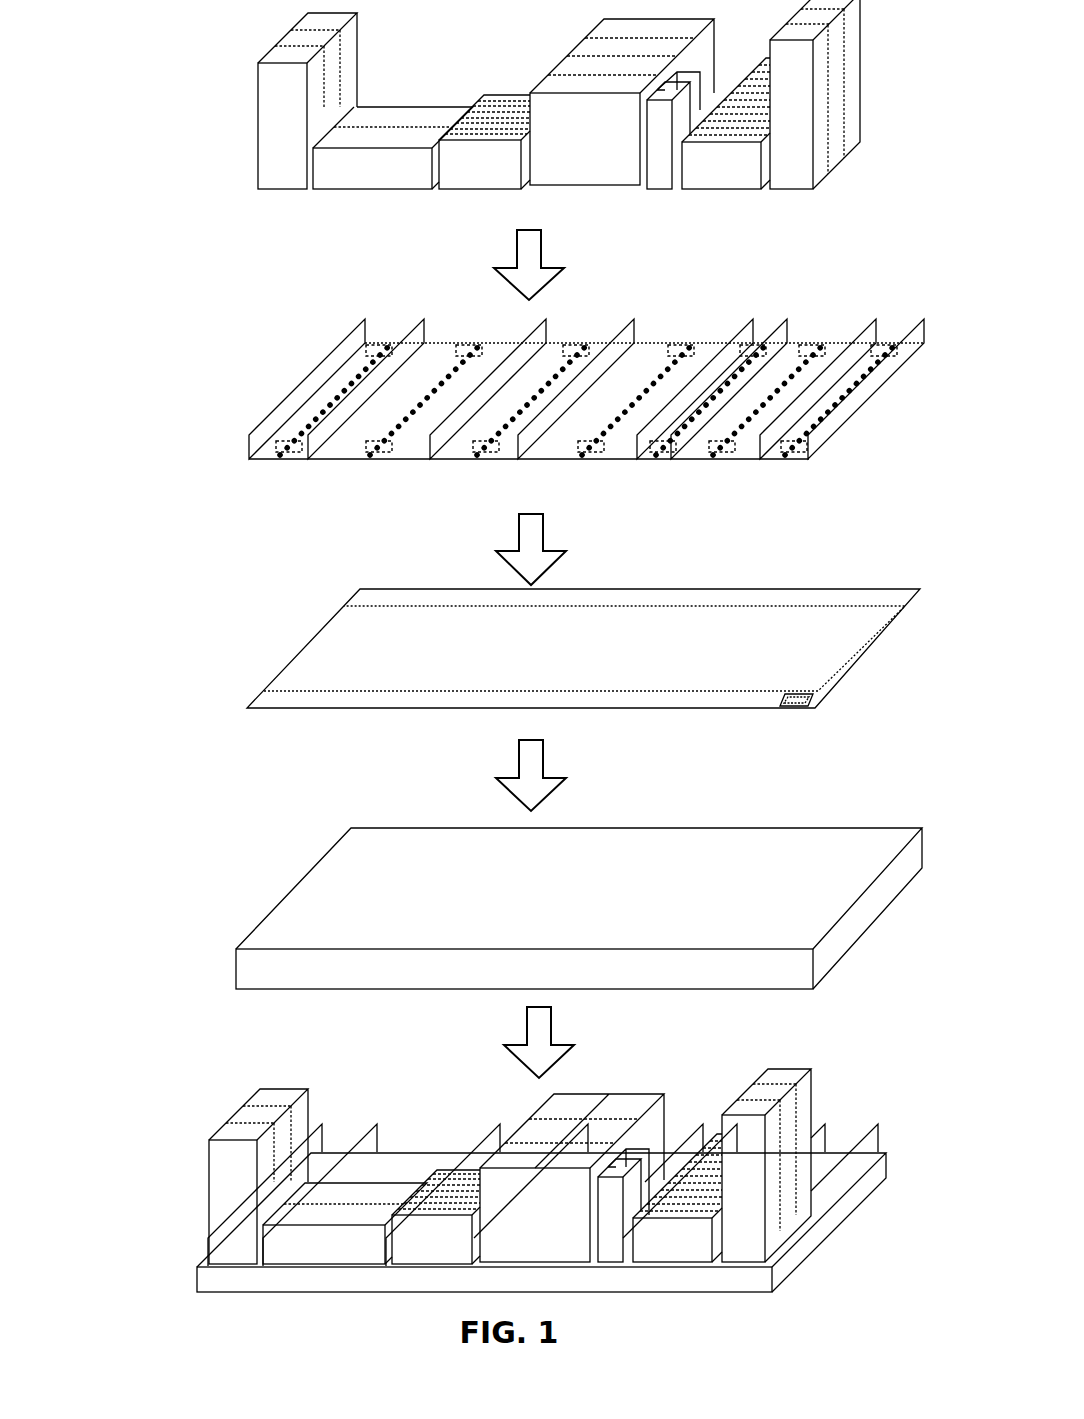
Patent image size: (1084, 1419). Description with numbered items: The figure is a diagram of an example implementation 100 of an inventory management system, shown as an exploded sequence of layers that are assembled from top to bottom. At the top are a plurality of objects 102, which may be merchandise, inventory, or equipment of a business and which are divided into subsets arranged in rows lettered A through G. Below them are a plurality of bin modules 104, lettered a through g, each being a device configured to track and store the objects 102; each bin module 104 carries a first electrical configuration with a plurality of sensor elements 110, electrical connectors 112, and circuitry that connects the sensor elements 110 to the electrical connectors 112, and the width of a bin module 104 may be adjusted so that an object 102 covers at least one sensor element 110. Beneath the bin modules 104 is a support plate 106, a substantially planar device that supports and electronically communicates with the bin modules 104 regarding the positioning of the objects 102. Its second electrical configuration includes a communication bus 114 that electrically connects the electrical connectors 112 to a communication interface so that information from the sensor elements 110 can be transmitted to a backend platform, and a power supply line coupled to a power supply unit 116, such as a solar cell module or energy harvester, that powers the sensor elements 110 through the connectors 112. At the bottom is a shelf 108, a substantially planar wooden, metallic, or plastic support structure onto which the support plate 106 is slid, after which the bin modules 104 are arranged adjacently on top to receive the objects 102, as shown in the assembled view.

The example implementation 100 is at (181, 40).
The plurality of objects 102 is at (226, 5).
The plurality of bin modules 104 is at (223, 292).
The support plate 106 is at (560, 671).
The shelf 108 is at (548, 904).
The plurality of sensor elements 110 is at (380, 349).
The electrical connectors 112 is at (590, 437).
The communication bus 114 is at (343, 606).
The power supply unit 116 is at (794, 709).